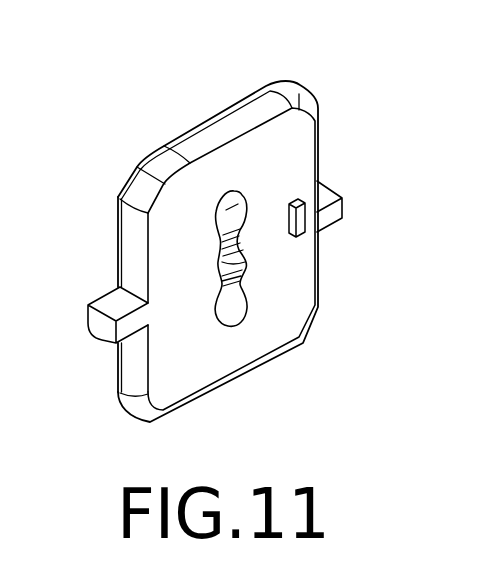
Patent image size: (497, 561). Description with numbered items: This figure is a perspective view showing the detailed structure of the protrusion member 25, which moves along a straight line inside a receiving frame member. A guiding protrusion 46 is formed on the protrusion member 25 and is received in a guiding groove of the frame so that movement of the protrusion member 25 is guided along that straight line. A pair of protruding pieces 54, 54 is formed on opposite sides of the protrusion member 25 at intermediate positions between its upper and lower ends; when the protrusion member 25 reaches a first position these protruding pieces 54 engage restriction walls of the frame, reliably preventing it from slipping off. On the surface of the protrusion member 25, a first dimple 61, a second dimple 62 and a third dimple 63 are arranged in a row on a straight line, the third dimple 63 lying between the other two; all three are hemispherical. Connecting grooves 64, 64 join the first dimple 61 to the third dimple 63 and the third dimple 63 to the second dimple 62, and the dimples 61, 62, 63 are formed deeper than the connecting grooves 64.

The protrusion member 25 is at (268, 86).
The protruding piece 54 is at (98, 325).
The guiding protrusion 46 is at (308, 236).
The first dimple 61 is at (237, 307).
The second dimple 62 is at (230, 215).
The third dimple 63 is at (238, 258).
The connecting groove 64 is at (220, 248).